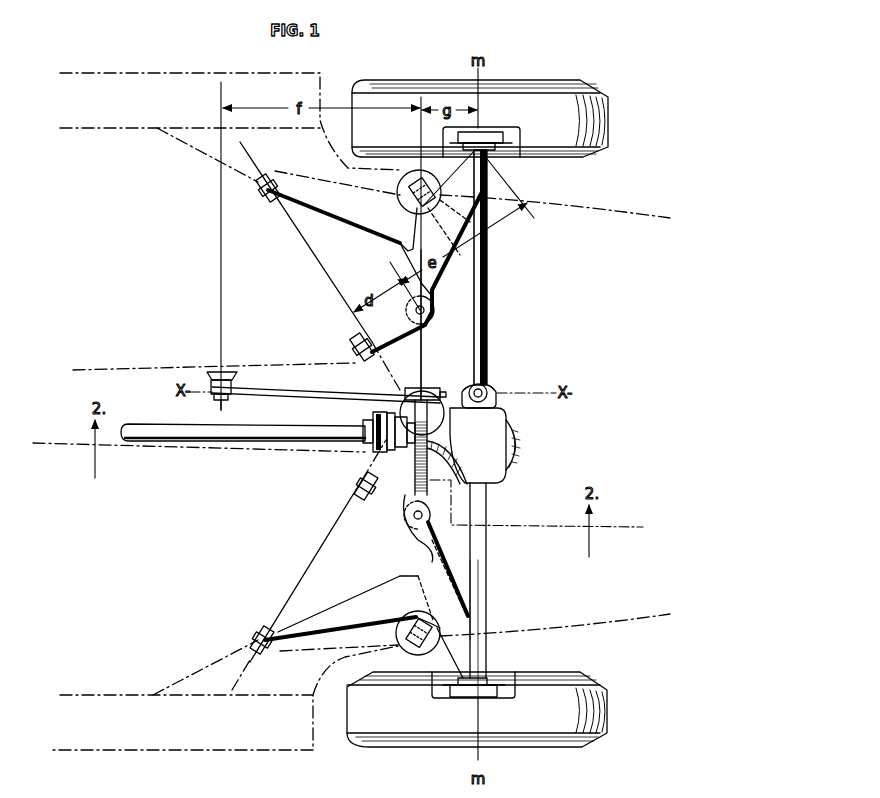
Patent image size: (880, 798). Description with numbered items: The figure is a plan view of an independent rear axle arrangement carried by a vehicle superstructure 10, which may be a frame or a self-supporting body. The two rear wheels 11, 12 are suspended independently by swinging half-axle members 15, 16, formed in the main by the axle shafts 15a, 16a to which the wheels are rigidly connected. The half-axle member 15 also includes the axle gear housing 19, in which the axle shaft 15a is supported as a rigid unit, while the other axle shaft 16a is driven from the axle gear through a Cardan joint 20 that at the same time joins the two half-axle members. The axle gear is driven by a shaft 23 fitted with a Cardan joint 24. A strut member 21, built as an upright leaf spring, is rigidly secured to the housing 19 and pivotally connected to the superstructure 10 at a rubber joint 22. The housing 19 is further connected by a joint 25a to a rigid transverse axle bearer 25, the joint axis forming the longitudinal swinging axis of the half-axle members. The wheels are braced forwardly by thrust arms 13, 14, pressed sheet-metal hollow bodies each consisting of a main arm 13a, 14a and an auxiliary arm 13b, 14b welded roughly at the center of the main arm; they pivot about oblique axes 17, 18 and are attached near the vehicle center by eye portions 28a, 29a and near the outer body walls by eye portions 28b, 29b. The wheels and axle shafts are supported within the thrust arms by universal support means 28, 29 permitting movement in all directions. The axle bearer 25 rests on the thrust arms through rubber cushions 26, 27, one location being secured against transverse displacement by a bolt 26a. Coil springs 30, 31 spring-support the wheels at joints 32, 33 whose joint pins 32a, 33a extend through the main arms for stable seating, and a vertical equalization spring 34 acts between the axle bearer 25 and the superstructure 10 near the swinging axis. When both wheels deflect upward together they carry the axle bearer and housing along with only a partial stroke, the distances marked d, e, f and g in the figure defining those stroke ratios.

The vehicle superstructure 10 is at (108, 128).
The rear wheel 11 is at (590, 708).
The rear wheel 12 is at (583, 117).
The thrust arm 13 is at (394, 578).
The main arm 13a is at (438, 561).
The auxiliary arm 13b is at (320, 623).
The thrust arm 14 is at (394, 245).
The main arm 14a is at (437, 282).
The auxiliary arm 14b is at (312, 200).
The swinging half-axle member 15 is at (492, 498).
The axle shaft 15a is at (488, 582).
The swinging half-axle member 16 is at (492, 304).
The axle shaft 16a is at (488, 247).
The pivot axis 17 is at (333, 531).
The pivot axis 18 is at (321, 277).
The axle gear housing 19 is at (492, 460).
The Cardan joint 20 is at (484, 388).
The strut member 21 is at (284, 396).
The rubber joint 22 is at (214, 372).
The shaft 23 is at (148, 432).
The Cardan joint 24 is at (380, 461).
The axle bearer 25 is at (428, 352).
The joint 25a is at (391, 388).
The rubber cushion 26 is at (426, 525).
The bolt 26a is at (414, 516).
The rubber cushion 27 is at (430, 313).
The universal support means 28 is at (483, 686).
The eye portion 28a is at (355, 479).
The eye portion 28b is at (260, 622).
The universal support means 29 is at (483, 138).
The eye portion 29a is at (355, 347).
The eye portion 29b is at (262, 193).
The coil spring 30 is at (413, 614).
The coil spring 31 is at (411, 208).
The joint 32 is at (405, 641).
The joint pin 32a is at (440, 564).
The joint 33 is at (408, 172).
The joint pin 33a is at (451, 226).
The equalization spring 34 is at (428, 432).